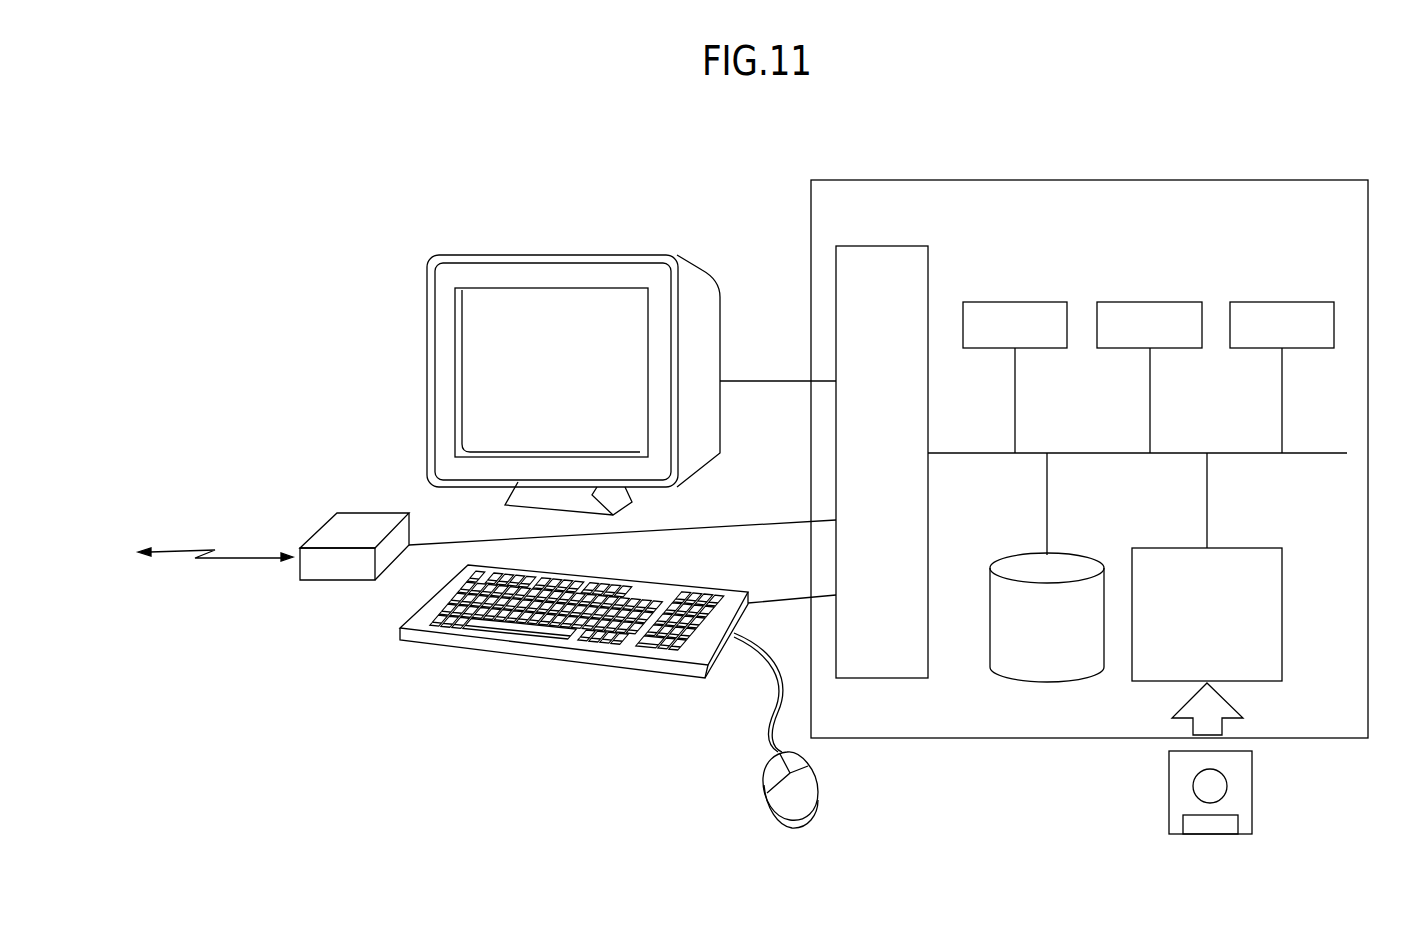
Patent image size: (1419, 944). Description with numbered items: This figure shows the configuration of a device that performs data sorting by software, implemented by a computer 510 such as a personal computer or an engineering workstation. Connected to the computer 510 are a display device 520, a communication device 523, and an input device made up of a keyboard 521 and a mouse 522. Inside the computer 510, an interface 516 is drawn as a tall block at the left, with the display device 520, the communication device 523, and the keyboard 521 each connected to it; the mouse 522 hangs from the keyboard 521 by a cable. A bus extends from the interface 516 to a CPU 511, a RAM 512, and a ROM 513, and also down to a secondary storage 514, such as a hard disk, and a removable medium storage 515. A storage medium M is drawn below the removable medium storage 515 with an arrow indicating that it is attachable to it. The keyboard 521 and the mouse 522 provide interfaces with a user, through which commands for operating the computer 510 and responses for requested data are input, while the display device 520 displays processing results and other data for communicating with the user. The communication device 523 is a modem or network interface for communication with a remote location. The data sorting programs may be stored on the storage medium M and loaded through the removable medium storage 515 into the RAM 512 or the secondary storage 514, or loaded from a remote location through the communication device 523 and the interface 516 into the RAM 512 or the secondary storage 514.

The computer 510 is at (1292, 180).
The CPU 511 is at (1025, 302).
The RAM 512 is at (1157, 302).
The ROM 513 is at (1286, 302).
The secondary storage 514 is at (989, 657).
The removable medium storage 515 is at (1282, 592).
The interface 516 is at (893, 246).
The display device 520 is at (598, 254).
The keyboard 521 is at (538, 657).
The mouse 522 is at (770, 816).
The communication device 523 is at (368, 513).
The storage medium M is at (1252, 795).